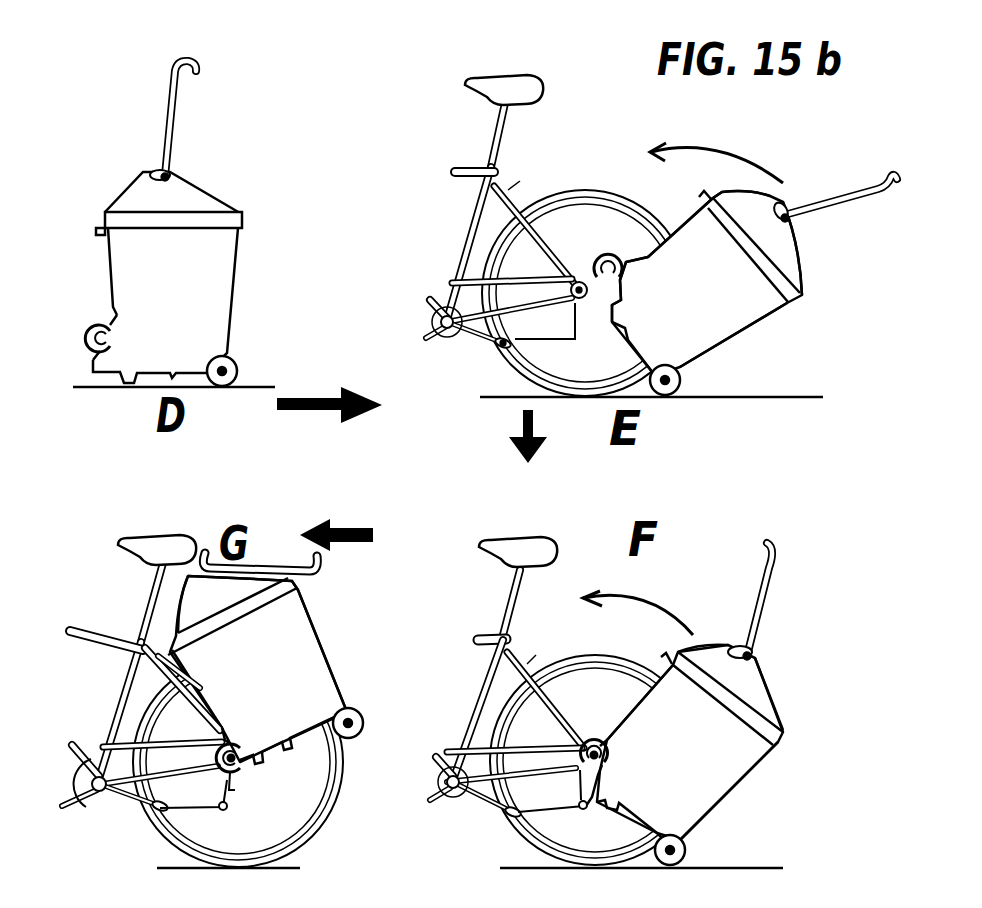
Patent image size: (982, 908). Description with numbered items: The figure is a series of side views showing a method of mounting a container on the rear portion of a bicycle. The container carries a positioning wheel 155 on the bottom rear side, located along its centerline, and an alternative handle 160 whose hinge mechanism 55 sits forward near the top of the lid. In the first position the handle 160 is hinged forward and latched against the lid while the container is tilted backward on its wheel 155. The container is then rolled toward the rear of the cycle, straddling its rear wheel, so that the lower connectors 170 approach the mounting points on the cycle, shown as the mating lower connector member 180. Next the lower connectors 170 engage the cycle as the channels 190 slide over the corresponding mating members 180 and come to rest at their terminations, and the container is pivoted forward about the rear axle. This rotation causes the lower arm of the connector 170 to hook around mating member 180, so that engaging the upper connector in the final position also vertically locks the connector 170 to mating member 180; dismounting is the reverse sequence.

The hinge mechanism 55 is at (170, 177).
The positioning wheel 155 is at (733, 843).
The alternative handle 160 is at (185, 121).
The lower connector 170 is at (118, 327).
The mating lower connector member 180 is at (500, 347).
The channel 190 is at (107, 343).